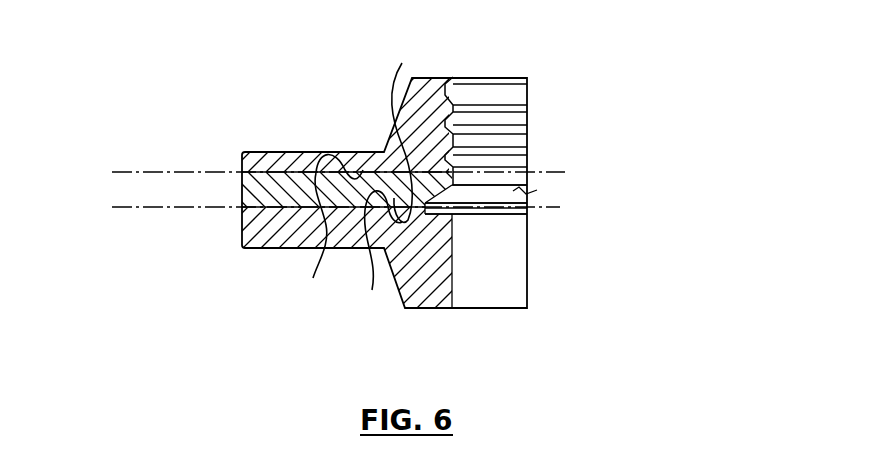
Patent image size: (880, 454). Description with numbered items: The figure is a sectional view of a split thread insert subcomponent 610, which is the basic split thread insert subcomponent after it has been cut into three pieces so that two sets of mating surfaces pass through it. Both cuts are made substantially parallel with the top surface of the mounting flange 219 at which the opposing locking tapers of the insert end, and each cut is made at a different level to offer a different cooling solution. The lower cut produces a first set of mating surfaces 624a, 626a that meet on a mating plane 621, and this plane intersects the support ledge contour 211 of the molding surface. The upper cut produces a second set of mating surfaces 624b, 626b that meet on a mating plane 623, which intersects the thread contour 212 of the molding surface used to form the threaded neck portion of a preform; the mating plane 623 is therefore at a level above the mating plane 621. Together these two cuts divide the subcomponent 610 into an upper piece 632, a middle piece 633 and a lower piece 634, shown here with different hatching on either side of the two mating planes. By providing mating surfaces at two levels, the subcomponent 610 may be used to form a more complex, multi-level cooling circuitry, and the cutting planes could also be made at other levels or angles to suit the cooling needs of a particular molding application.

The mounting flange 219 is at (275, 152).
The upper piece 632 is at (240, 167).
The middle piece 633 is at (240, 187).
The lower piece 634 is at (240, 237).
The mating plane 623 is at (122, 172).
The mating plane 621 is at (120, 207).
The split thread insert subcomponent 610 is at (665, 168).
The thread contour detail 212 is at (423, 208).
The support ledge contour detail 211 is at (425, 206).
The mating surface 624a is at (424, 133).
The mating surface 624b is at (365, 152).
The mating surface 626a is at (362, 256).
The mating surface 626b is at (288, 234).